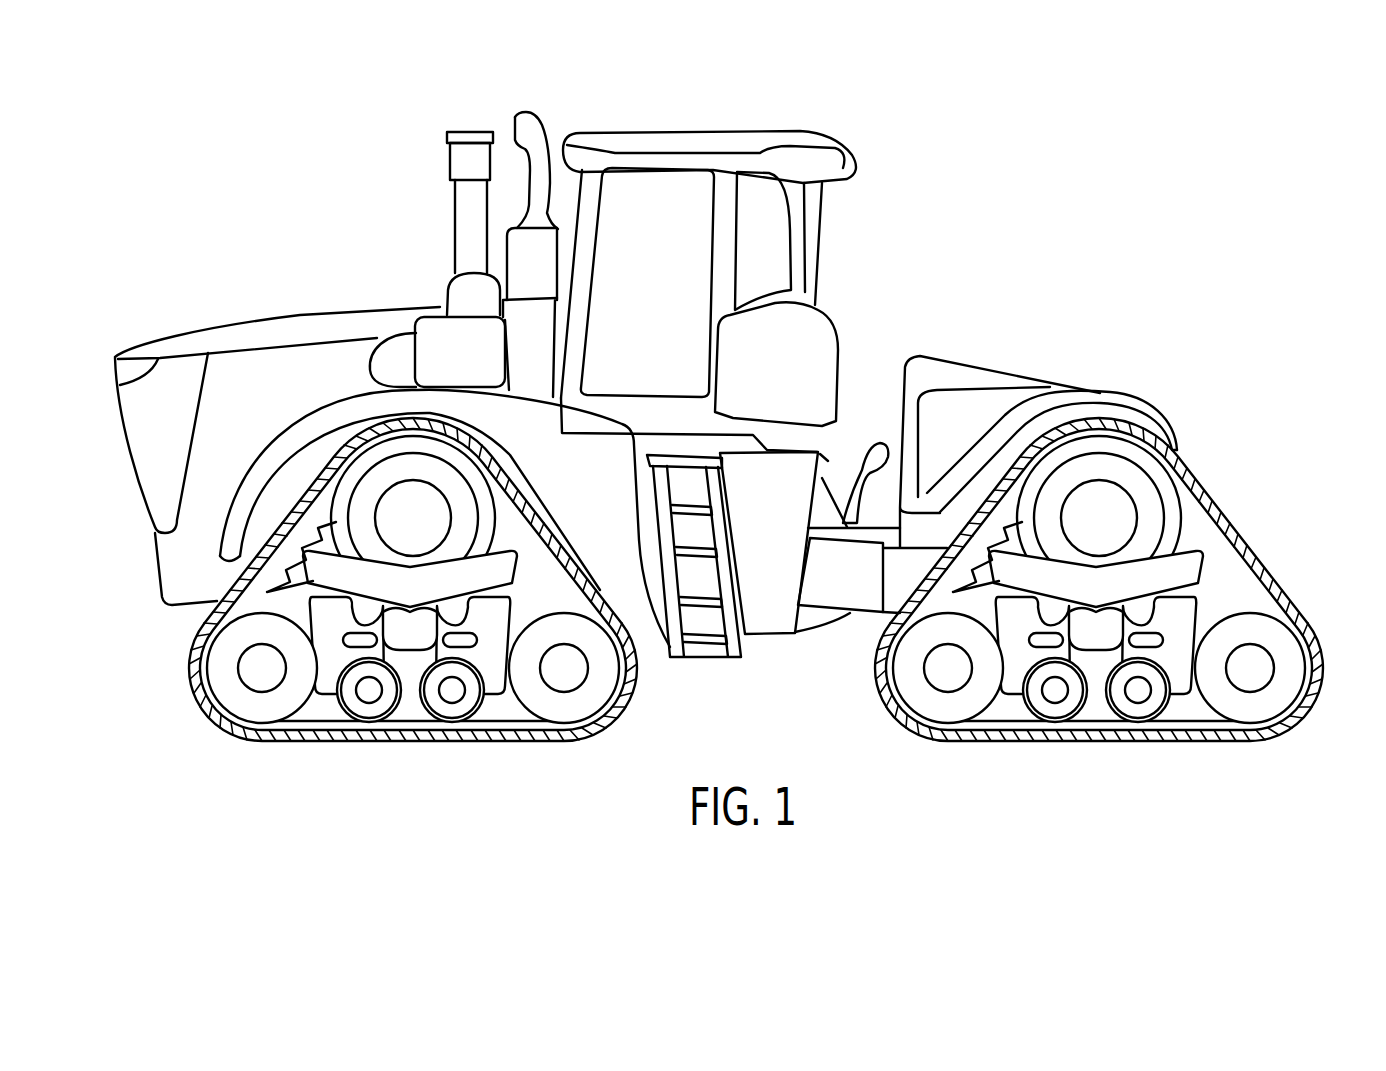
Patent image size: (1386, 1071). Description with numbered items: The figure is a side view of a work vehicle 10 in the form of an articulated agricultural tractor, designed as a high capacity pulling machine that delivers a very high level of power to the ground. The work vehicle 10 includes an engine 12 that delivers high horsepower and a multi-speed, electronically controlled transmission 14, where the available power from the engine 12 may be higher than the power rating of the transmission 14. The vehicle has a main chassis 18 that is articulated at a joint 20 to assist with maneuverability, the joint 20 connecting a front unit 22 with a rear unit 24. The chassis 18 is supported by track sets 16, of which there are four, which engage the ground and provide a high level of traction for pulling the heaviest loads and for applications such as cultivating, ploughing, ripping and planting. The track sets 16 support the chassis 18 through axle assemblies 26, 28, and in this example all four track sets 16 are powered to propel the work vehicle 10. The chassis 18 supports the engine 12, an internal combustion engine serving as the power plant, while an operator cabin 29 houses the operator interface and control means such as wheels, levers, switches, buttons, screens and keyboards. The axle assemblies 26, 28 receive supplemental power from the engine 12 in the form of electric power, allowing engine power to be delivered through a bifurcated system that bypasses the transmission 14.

The work vehicle 10 is at (735, 437).
The engine 12 is at (293, 370).
The transmission 14 is at (617, 517).
The track sets 16 is at (755, 583).
The main chassis 18 is at (838, 590).
The joint 20 is at (790, 573).
The front unit 22 is at (200, 327).
The rear unit 24 is at (1017, 372).
The axle assembly 26 is at (412, 517).
The axle assembly 28 is at (1132, 494).
The operator cabin 29 is at (677, 133).